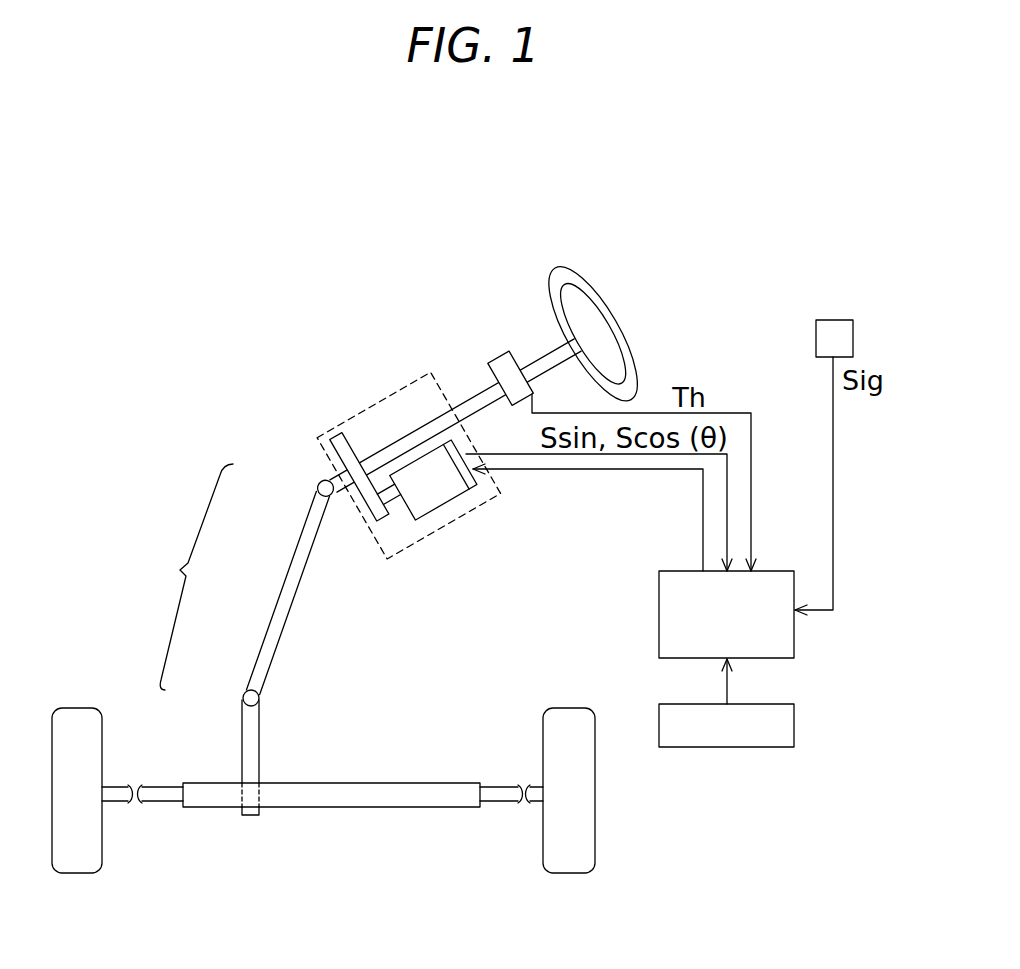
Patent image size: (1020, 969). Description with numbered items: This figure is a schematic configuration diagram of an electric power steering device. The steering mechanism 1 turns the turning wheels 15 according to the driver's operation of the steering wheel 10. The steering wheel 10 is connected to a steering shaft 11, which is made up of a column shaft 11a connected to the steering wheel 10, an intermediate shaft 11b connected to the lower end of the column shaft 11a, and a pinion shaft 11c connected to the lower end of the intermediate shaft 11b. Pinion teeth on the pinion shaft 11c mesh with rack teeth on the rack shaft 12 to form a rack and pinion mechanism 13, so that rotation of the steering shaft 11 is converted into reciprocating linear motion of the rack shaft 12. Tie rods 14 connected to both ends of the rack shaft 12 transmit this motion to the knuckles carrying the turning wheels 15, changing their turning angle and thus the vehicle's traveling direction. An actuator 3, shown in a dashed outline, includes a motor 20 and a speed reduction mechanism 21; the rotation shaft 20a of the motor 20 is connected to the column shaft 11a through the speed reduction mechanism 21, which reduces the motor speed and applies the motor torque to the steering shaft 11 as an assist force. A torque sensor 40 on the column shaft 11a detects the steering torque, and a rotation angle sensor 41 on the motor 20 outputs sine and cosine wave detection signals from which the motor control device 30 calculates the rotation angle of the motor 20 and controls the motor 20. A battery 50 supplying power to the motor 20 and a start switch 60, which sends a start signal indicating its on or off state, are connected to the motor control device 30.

The steering mechanism 1 is at (92, 428).
The actuator 3 is at (365, 410).
The steering wheel 10 is at (624, 326).
The steering shaft 11 is at (186, 577).
The column shaft 11a is at (317, 486).
The intermediate shaft 11b is at (283, 584).
The pinion shaft 11c is at (241, 714).
The rack shaft 12 is at (404, 808).
The rack and pinion mechanism 13 is at (233, 780).
The tie rod 14 is at (165, 803).
The turning wheel 15 is at (75, 875).
The motor 20 is at (440, 503).
The rotation shaft 20a is at (400, 514).
The speed reduction mechanism 21 is at (362, 509).
The motor control device 30 is at (796, 632).
The torque sensor 40 is at (503, 353).
The rotation angle sensor 41 is at (478, 492).
The battery 50 is at (796, 720).
The start switch 60 is at (835, 320).